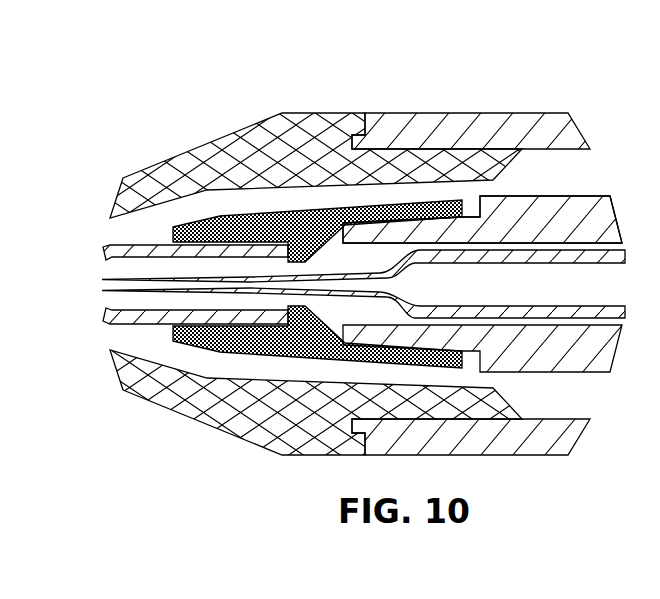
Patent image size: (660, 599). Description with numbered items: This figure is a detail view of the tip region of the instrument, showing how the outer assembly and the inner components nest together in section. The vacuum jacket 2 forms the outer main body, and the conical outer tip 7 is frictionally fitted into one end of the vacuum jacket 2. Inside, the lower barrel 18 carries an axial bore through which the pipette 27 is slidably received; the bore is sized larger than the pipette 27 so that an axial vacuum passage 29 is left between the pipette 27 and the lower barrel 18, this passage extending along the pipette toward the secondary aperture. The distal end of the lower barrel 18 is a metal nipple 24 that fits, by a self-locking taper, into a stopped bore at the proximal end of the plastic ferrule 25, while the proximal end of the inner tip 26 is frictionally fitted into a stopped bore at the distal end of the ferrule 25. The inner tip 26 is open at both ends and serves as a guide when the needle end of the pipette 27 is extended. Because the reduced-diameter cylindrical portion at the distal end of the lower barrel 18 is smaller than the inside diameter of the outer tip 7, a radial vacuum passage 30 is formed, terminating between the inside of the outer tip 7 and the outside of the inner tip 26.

The vacuum jacket 2 is at (445, 243).
The outer tip 7 is at (316, 125).
The lower barrel 18 is at (482, 202).
The metal nipple 24 is at (482, 137).
The ferrule 25 is at (312, 222).
The inner tip 26 is at (157, 200).
The pipette 27 is at (348, 157).
The axial vacuum passage 29 is at (0, 263).
The radial vacuum passage 30 is at (0, 200).